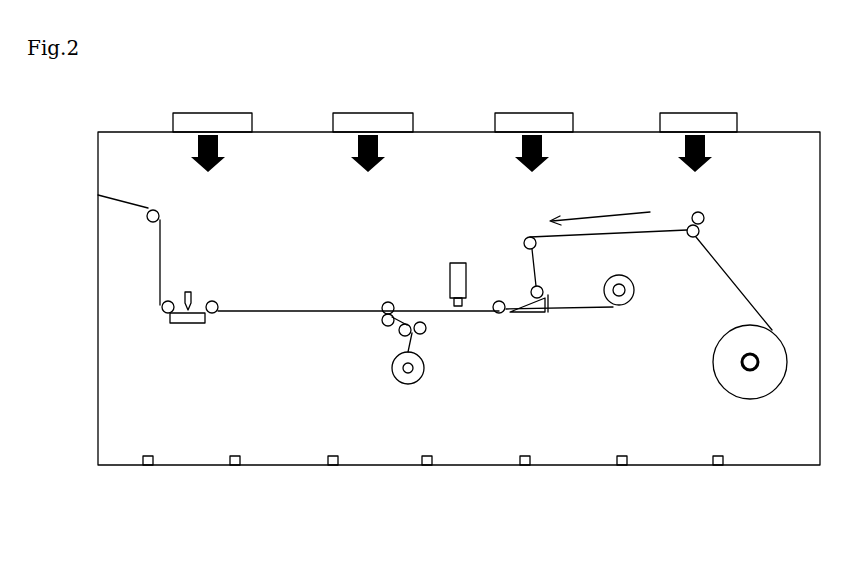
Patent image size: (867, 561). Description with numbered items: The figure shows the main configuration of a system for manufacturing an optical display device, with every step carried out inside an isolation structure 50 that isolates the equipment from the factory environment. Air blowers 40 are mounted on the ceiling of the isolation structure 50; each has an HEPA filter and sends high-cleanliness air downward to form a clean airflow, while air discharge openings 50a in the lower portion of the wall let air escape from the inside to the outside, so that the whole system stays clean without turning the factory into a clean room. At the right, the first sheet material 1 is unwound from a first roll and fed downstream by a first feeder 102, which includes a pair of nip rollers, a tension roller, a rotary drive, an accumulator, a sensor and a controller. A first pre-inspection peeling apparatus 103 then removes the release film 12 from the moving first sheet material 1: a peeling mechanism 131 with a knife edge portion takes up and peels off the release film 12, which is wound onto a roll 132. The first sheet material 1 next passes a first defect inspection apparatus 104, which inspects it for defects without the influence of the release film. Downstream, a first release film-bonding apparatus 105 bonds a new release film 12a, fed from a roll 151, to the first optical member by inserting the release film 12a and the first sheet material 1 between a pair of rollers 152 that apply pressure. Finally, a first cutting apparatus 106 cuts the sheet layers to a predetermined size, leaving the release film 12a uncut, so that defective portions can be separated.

The first sheet material 1 is at (761, 312).
The release film 12 is at (580, 305).
The release film 12a is at (416, 342).
The air blower 40 is at (700, 113).
The isolation structure 50 is at (665, 468).
The air discharge openings 50a is at (525, 472).
The first feeder 102 is at (702, 204).
The first pre-inspection peeling apparatus 103 is at (597, 337).
The first defect inspection apparatus 104 is at (457, 260).
The first release film-bonding apparatus 105 is at (368, 387).
The first cutting apparatus 106 is at (190, 290).
The peeling mechanism 131 is at (537, 307).
The roll 132 is at (619, 297).
The roll 151 is at (410, 380).
The pair of rollers 152 is at (388, 300).